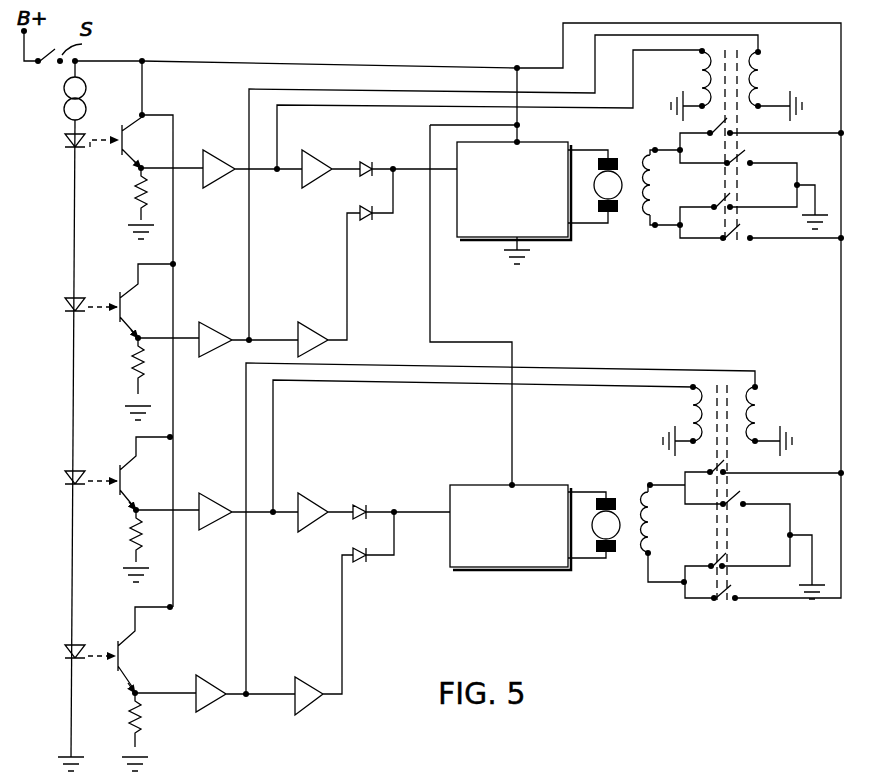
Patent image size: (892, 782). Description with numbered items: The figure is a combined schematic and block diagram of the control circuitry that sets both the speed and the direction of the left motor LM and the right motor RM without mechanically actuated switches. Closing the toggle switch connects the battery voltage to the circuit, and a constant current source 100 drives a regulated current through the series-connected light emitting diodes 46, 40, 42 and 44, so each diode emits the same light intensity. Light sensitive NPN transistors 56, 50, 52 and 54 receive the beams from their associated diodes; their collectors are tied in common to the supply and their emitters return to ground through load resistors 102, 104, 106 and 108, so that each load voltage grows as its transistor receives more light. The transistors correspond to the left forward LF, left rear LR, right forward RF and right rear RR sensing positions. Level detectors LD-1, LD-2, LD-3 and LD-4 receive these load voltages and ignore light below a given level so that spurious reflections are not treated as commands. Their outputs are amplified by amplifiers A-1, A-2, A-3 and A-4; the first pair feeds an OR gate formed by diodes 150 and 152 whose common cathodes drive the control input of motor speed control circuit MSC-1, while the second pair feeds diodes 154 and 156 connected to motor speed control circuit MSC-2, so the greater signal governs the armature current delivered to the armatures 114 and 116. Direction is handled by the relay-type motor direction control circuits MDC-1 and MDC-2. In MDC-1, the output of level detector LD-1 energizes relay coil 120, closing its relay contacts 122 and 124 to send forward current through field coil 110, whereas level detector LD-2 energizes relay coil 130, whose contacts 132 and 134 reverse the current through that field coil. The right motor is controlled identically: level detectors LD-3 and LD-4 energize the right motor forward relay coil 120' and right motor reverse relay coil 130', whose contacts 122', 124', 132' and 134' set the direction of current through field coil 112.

The constant current source 100 is at (64, 99).
The light emitting diode 46 is at (64, 152).
The light emitting diode 40 is at (63, 304).
The light emitting diode 42 is at (63, 478).
The light emitting diode 44 is at (63, 654).
The left forward light sensitive transistor 56 is at (142, 136).
The left reverse light sensitive transistor 50 is at (140, 302).
The light sensitive transistor 52 is at (140, 475).
The light sensitive transistor 54 is at (135, 660).
The load resistor 102 is at (136, 206).
The load resistor 104 is at (134, 386).
The load resistor 106 is at (134, 554).
The load resistor 108 is at (133, 734).
The left front sensor LF is at (101, 168).
The left rear sensor LR is at (100, 343).
The right front sensor RF is at (98, 511).
The right rear sensor RR is at (97, 690).
The level detector LD-1 is at (218, 175).
The level detector LD-2 is at (214, 346).
The level detector LD-3 is at (214, 518).
The level detector LD-4 is at (210, 700).
The amplifier A-1 is at (320, 175).
The amplifier A-2 is at (316, 346).
The amplifier A-3 is at (316, 518).
The amplifier A-4 is at (313, 700).
The diode 150 is at (368, 160).
The diode 152 is at (371, 222).
The diode 154 is at (366, 503).
The diode 156 is at (370, 566).
The motor speed control circuit MSC-1 is at (480, 228).
The motor speed control circuit MSC-2 is at (495, 563).
The motor direction control circuit MDC-1 is at (712, 175).
The motor direction control circuit MDC-2 is at (707, 356).
The left motor LM is at (622, 148).
The right motor RM is at (640, 470).
The field coil 110 is at (675, 187).
The field coil 112 is at (673, 533).
The armature 114 is at (620, 190).
The armature 116 is at (614, 532).
The relay coil 120 is at (679, 84).
The relay coil 130 is at (786, 85).
The relay contact 122 is at (742, 139).
The relay contact 132 is at (754, 189).
The relay contact 124 is at (738, 214).
The relay contact 134 is at (743, 248).
The right motor forward relay coil 120' is at (671, 420).
The right motor reverse relay coil 130' is at (781, 420).
The relay contact 122' is at (754, 479).
The relay contact 132' is at (755, 542).
The relay contact 124' is at (739, 575).
The relay contact 134' is at (755, 607).